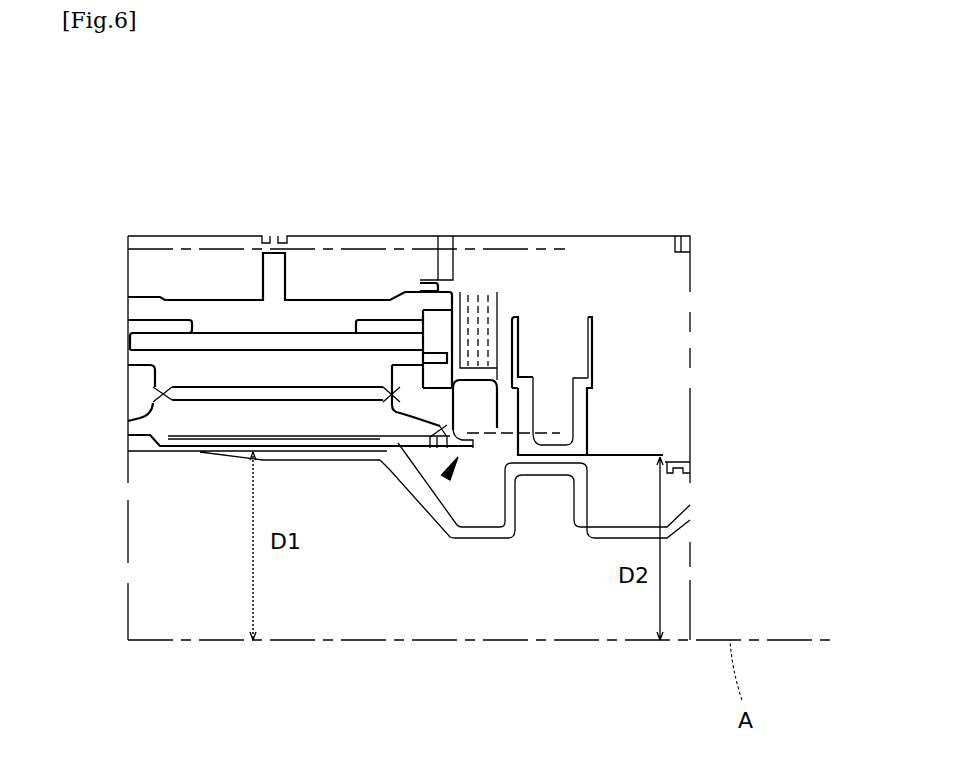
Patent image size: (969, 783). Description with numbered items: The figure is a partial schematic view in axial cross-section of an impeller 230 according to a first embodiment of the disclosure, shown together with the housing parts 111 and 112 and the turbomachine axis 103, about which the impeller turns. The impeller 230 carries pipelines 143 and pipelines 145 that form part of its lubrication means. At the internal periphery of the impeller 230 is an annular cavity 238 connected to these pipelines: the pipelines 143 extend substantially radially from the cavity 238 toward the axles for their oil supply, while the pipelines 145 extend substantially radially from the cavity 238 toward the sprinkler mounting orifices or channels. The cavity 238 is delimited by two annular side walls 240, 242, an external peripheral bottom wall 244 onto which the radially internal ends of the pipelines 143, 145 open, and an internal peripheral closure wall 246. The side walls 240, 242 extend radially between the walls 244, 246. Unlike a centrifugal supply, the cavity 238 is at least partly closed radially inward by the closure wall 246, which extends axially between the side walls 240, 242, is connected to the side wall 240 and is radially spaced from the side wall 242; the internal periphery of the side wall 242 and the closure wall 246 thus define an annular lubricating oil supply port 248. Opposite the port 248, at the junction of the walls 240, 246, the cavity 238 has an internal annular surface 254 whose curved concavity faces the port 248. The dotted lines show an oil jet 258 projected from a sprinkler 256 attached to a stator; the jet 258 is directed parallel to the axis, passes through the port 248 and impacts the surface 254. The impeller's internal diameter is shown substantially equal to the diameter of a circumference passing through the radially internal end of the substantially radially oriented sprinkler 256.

The central axis 103 is at (597, 628).
The first housing part 111 is at (300, 433).
The second housing part 112 is at (275, 360).
The pipelines 143 is at (497, 395).
The pipelines 145 is at (478, 330).
The impeller 230 is at (445, 480).
The annular cavity 238 is at (515, 315).
The annular side wall 240 is at (437, 388).
The annular side wall 242 is at (430, 330).
The external peripheral bottom wall 244 is at (467, 378).
The internal peripheral closure wall 246 is at (476, 453).
The annular lubricating oil supply port 248 is at (523, 432).
The internal annular surface 254 is at (435, 438).
The sprinkler 256 is at (585, 405).
The oil jet 258 is at (515, 528).